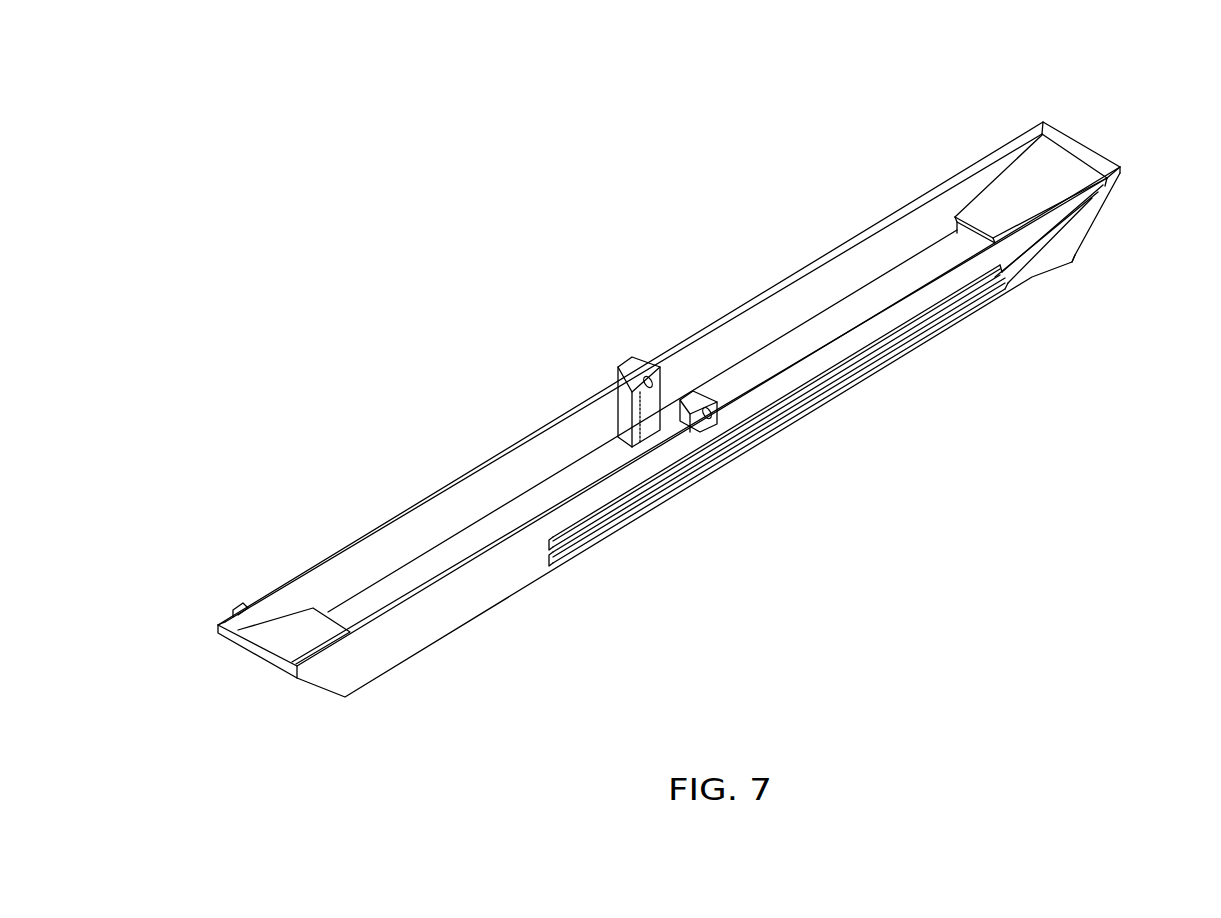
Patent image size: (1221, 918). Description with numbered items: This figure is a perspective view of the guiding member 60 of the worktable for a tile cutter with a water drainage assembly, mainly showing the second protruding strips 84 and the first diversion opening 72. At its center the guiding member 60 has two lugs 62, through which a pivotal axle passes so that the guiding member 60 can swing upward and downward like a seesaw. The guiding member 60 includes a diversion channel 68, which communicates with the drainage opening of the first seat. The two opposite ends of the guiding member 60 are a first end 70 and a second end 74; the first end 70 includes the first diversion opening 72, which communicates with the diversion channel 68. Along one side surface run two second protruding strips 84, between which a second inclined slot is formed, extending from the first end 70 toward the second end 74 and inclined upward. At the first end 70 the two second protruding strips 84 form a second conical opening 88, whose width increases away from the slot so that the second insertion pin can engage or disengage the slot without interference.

The guiding member 60 is at (688, 142).
The lugs 62 is at (706, 405).
The diversion channel 68 is at (800, 345).
The first end 70 is at (1082, 143).
The first diversion opening 72 is at (977, 238).
The second end 74 is at (246, 650).
The second protruding strips 84 is at (874, 362).
The second conical opening 88 is at (1066, 244).